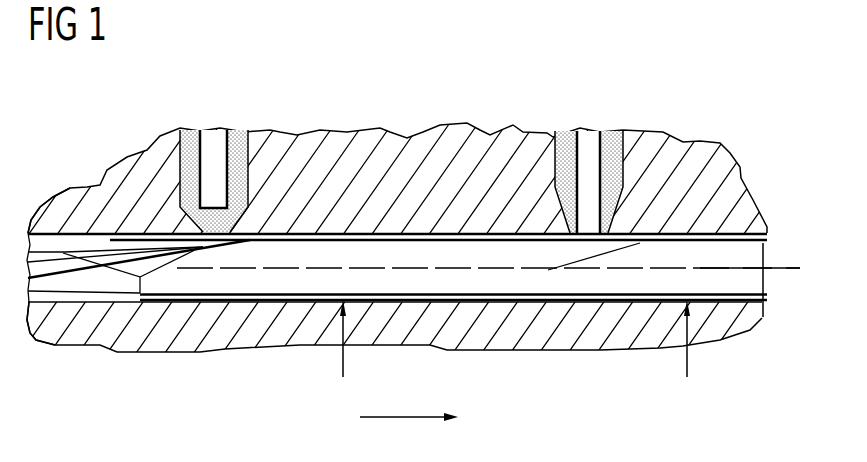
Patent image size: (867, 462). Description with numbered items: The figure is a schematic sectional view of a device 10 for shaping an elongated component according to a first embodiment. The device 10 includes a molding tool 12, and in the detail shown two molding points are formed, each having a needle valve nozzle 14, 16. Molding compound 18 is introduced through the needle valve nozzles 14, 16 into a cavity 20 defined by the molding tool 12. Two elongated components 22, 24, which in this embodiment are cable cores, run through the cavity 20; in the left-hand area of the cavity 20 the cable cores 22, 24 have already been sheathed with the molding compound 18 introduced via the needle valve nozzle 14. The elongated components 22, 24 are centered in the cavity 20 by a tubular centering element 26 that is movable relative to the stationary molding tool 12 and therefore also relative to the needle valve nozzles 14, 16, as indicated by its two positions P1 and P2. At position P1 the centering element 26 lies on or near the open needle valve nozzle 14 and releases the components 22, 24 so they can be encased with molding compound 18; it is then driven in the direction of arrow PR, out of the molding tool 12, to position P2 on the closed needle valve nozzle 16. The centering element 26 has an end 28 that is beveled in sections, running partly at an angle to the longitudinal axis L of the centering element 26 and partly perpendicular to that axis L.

The device 10 is at (727, 53).
The molding tool 12 is at (424, 156).
The needle valve nozzle 14 is at (229, 152).
The needle valve nozzle 16 is at (607, 151).
The molding compound 18 is at (334, 156).
The cavity 20 is at (389, 349).
The elongated component 22 is at (49, 193).
The elongated component 24 is at (41, 345).
The tubular centering element 26 is at (205, 283).
The end 28 is at (163, 278).
The position P1 is at (319, 343).
The position P2 is at (715, 346).
The arrow PR is at (409, 386).
The longitudinal axis L is at (780, 268).